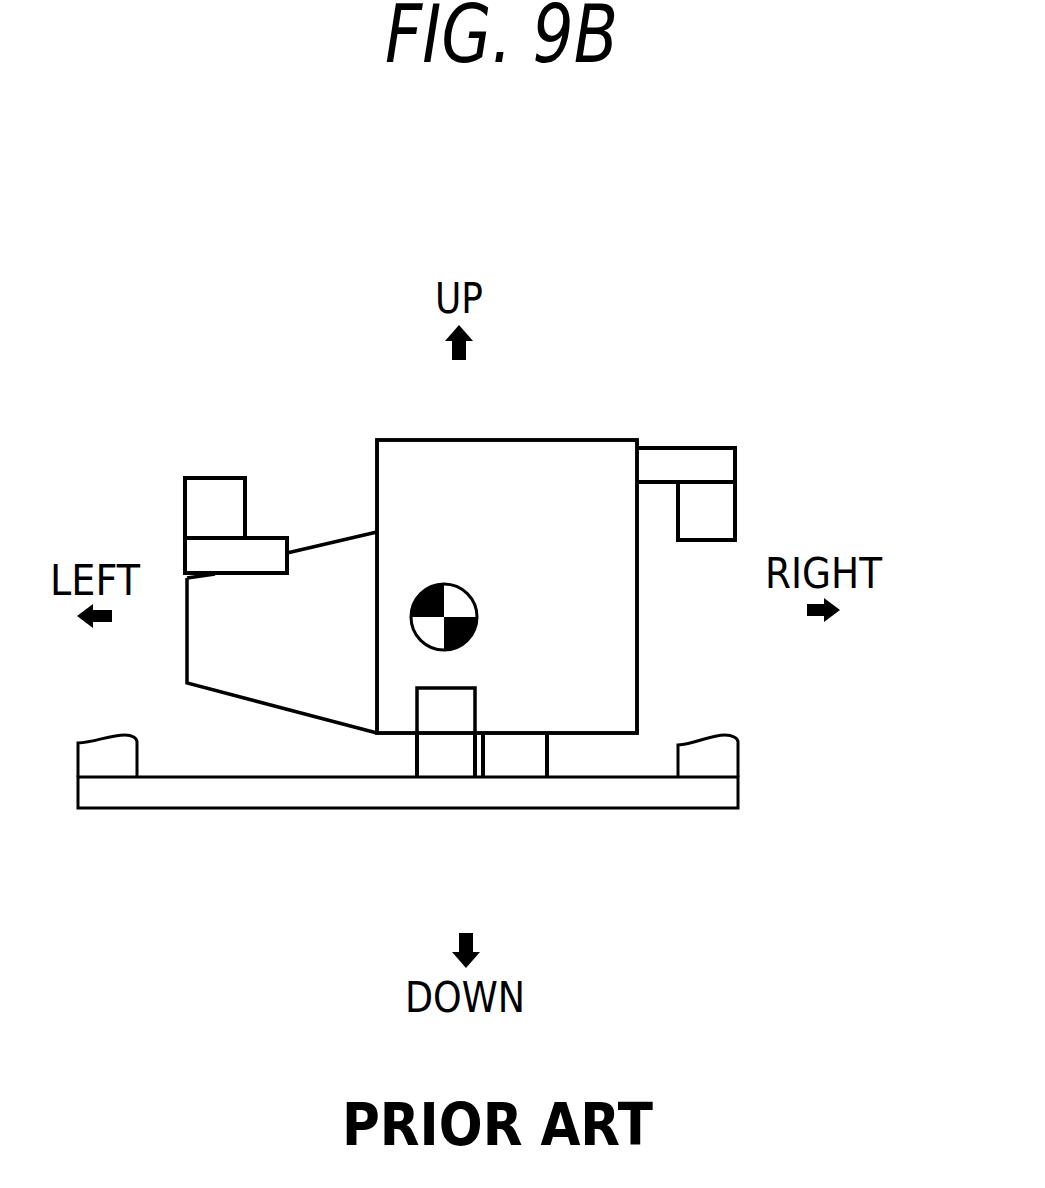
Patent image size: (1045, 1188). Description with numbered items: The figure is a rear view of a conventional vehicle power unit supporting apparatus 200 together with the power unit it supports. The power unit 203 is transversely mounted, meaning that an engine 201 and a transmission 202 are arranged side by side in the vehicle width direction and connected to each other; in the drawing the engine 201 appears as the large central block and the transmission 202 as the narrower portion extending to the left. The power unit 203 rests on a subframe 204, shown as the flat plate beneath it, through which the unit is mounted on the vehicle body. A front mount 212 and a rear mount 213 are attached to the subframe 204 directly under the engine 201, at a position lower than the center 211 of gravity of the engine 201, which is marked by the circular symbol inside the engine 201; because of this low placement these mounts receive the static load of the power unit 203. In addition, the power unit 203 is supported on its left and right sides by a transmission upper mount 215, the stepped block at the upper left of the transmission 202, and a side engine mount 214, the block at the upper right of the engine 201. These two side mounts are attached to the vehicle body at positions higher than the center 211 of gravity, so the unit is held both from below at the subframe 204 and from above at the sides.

The vehicle power unit supporting apparatus 200 is at (820, 338).
The engine 201 is at (570, 587).
The transmission 202 is at (240, 632).
The power unit 203 is at (620, 438).
The subframe 204 is at (145, 793).
The center of gravity 211 is at (461, 584).
The front mount 212 is at (513, 768).
The rear mount 213 is at (450, 767).
The side engine mount 214 is at (713, 512).
The transmission upper mount 215 is at (217, 500).